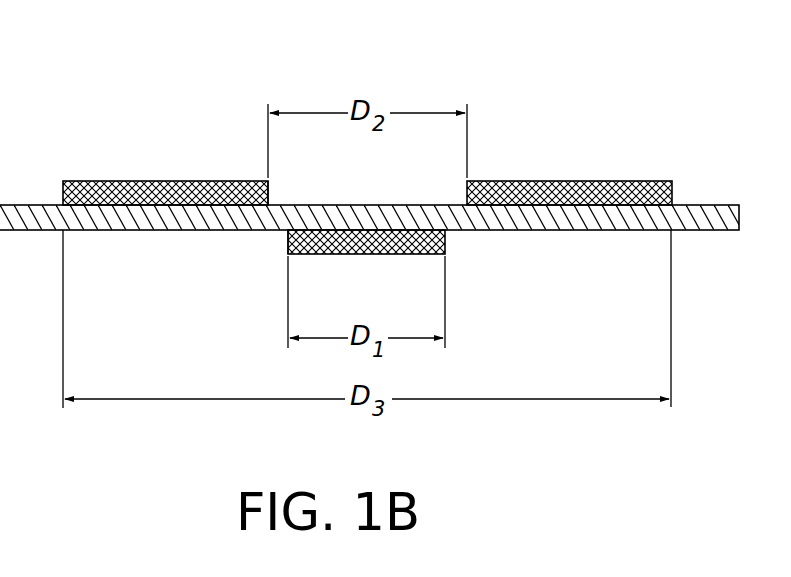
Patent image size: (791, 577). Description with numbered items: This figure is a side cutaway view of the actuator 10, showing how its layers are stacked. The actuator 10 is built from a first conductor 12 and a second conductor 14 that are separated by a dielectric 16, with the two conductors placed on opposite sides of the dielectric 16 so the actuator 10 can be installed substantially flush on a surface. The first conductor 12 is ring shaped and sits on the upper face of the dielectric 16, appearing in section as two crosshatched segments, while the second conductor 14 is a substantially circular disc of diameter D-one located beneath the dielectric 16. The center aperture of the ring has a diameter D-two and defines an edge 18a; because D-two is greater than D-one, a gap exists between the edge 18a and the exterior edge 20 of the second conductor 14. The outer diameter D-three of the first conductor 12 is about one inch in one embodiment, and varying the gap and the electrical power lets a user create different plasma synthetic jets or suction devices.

The actuator 10 is at (579, 139).
The first conductor 12 is at (131, 180).
The second conductor 14 is at (336, 256).
The dielectric 16 is at (710, 206).
The edge 18a is at (270, 188).
The exterior edge 20 is at (290, 243).